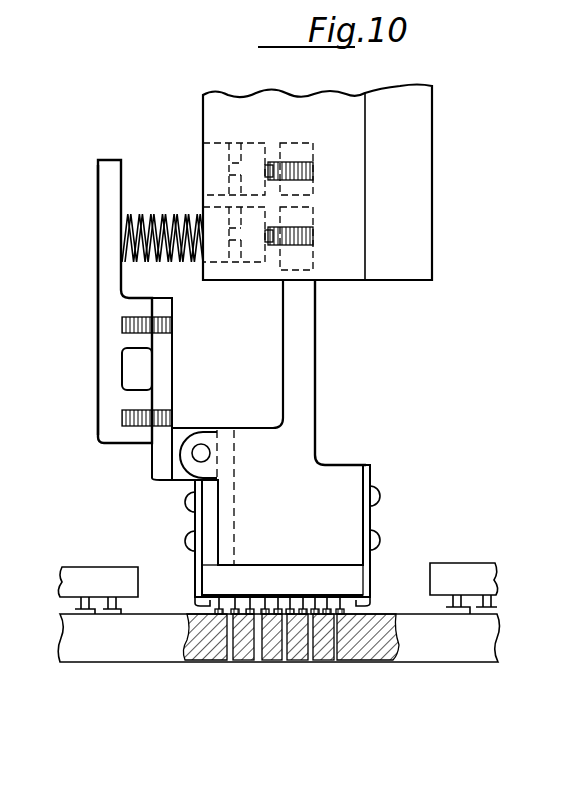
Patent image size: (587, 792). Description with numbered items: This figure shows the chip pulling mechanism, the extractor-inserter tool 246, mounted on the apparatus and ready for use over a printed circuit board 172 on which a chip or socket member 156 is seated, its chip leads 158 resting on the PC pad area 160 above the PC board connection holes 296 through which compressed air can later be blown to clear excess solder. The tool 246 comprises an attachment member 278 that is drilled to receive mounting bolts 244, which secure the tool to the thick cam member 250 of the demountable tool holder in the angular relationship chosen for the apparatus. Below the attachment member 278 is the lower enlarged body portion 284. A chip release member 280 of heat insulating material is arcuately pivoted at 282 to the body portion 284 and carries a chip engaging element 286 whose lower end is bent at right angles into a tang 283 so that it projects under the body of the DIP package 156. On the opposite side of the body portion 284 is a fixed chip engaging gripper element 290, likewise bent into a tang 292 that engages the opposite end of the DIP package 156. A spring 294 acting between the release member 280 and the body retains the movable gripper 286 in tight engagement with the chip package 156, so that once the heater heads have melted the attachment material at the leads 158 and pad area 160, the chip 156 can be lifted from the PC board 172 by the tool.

The chip 156 is at (73, 578).
The chip leads 158 is at (113, 598).
The PC pad area 160 is at (85, 617).
The circuit board 172 is at (447, 648).
The bolts 244 is at (218, 152).
The extractor-inserter tool 246 is at (98, 341).
The cam member 250 is at (356, 282).
The attachment member 278 is at (318, 396).
The chip release member 280 is at (98, 375).
The pivot 282 is at (201, 452).
The left foot 283 is at (196, 604).
The lower enlarged body portion 284 is at (311, 511).
The chip engaging element 286 is at (196, 518).
The fixed chip engaging gripper element 290 is at (372, 476).
The tang 292 is at (371, 605).
The spring 294 is at (170, 212).
The PC board connection holes 296 is at (230, 663).